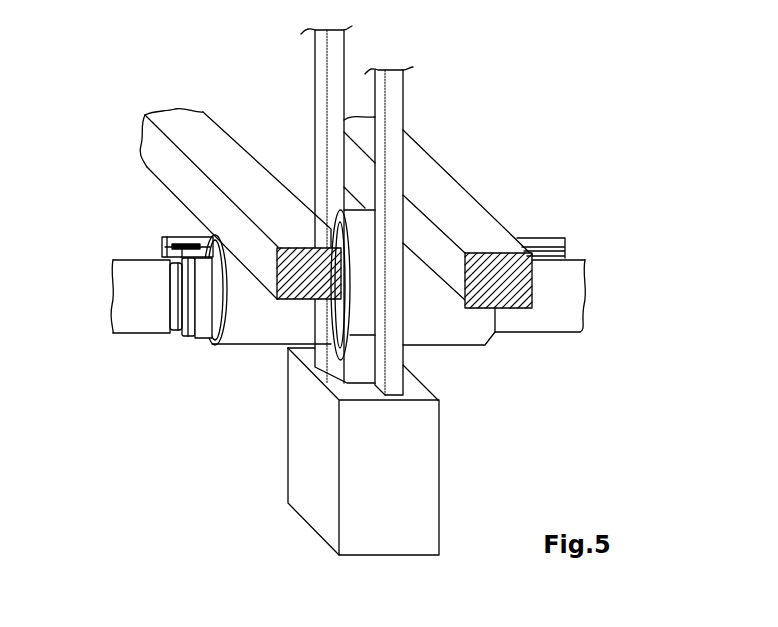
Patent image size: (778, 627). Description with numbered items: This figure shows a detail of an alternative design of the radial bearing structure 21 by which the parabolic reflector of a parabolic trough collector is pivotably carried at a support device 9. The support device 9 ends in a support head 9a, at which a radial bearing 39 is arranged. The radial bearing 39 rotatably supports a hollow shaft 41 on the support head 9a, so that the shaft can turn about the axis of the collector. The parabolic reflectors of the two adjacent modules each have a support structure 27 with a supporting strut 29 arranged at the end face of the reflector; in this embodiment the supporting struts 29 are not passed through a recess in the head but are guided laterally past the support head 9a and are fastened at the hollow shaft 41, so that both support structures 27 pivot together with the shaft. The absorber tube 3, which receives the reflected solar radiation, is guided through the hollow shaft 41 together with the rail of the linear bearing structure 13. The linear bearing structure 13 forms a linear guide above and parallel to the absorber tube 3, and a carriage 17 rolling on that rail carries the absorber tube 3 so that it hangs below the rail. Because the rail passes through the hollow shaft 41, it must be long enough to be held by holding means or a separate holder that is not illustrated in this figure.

The absorber tube 3 is at (122, 268).
The support device 9 is at (278, 508).
The support head 9a is at (395, 93).
The linear bearing structure 13 is at (175, 233).
The carriage 17 is at (550, 243).
The radial bearing structure 21 is at (275, 362).
The support structure 27 is at (188, 88).
The supporting strut 29 is at (160, 118).
The radial bearing 39 is at (370, 335).
The hollow shaft 41 is at (233, 325).